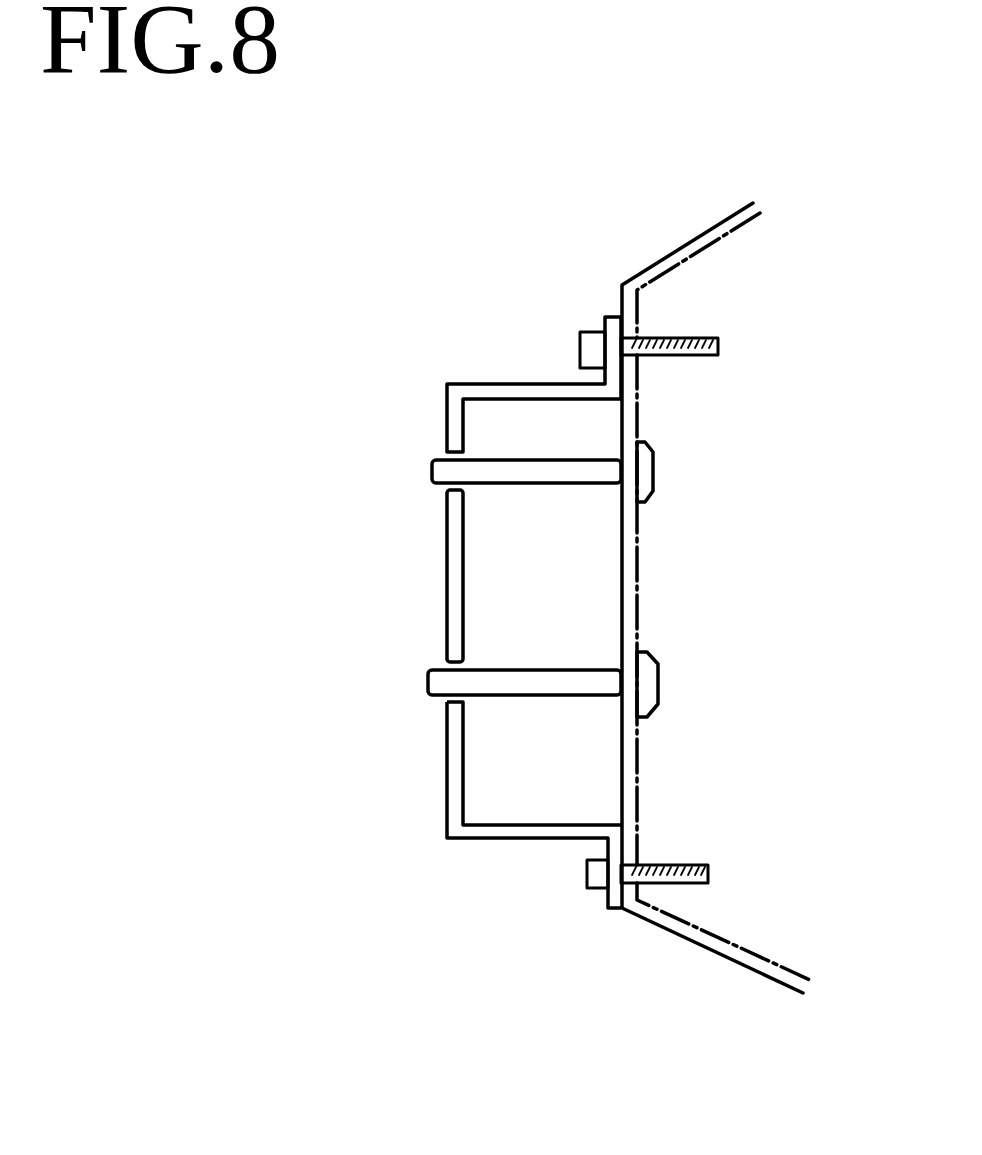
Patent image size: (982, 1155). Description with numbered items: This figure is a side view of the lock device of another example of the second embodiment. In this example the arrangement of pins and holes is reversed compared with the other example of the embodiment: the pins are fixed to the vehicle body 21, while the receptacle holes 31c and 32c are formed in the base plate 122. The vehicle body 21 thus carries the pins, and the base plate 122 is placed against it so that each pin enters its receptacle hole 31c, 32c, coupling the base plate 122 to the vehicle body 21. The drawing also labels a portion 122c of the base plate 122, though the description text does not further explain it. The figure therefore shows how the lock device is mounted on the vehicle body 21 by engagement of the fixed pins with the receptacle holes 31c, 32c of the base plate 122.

The vehicle body 21 is at (732, 948).
The receptacle hole 31c is at (453, 445).
The receptacle hole 32c is at (453, 653).
The mounting plate portion 122c is at (452, 562).
The base plate 122 is at (453, 792).